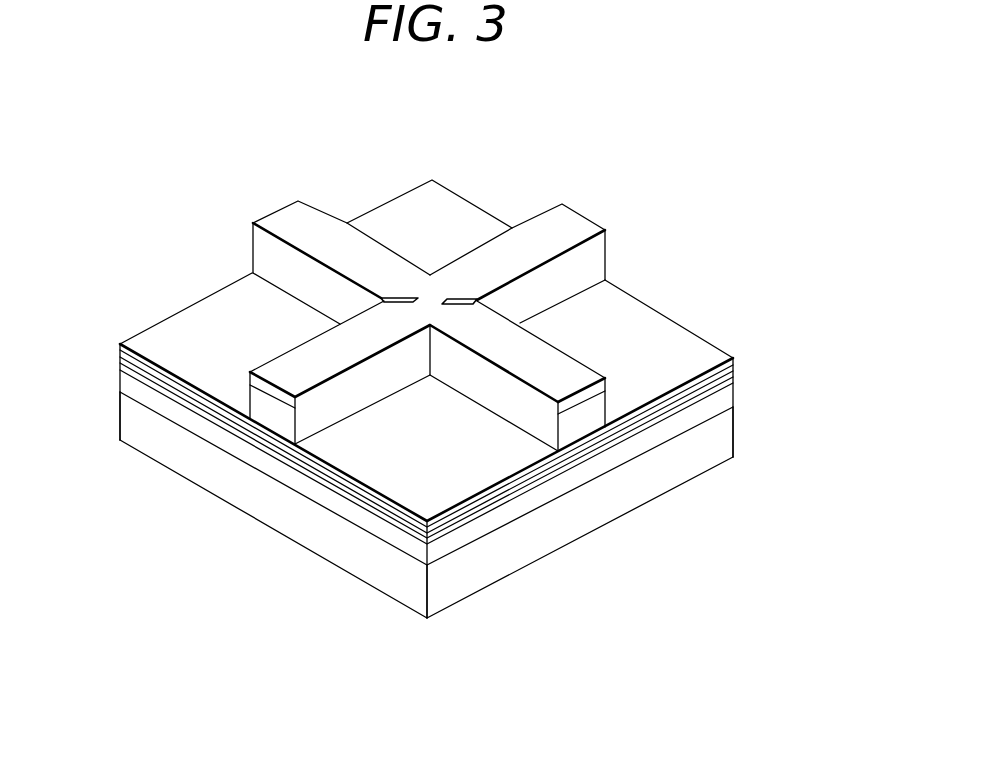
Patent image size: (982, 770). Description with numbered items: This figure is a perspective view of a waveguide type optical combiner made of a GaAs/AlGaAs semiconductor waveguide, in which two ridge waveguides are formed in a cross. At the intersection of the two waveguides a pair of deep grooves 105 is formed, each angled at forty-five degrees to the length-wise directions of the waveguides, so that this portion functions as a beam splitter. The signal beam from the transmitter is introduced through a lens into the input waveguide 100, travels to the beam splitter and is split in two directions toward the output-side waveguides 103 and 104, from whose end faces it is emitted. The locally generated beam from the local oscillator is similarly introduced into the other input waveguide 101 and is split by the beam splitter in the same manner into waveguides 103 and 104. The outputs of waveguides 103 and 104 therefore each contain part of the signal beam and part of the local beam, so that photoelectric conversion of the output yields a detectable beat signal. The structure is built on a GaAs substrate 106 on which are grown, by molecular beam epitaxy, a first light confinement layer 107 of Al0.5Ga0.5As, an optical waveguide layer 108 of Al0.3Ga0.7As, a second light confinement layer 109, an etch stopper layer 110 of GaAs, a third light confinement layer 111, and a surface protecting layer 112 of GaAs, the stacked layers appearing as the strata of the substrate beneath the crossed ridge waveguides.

The waveguide 100 is at (313, 366).
The input waveguide 101 is at (321, 232).
The waveguide 103 is at (535, 247).
The waveguide 104 is at (530, 367).
The deep grooves 105 is at (460, 297).
The GaAs substrate 106 is at (718, 443).
The first light confinement layer 107 is at (718, 402).
The optical waveguide layer 108 is at (735, 385).
The second light confinement layer 109 is at (735, 368).
The etch stopper layer 110 is at (735, 357).
The third light confinement layer 111 is at (609, 406).
The surface protecting layer 112 is at (592, 415).